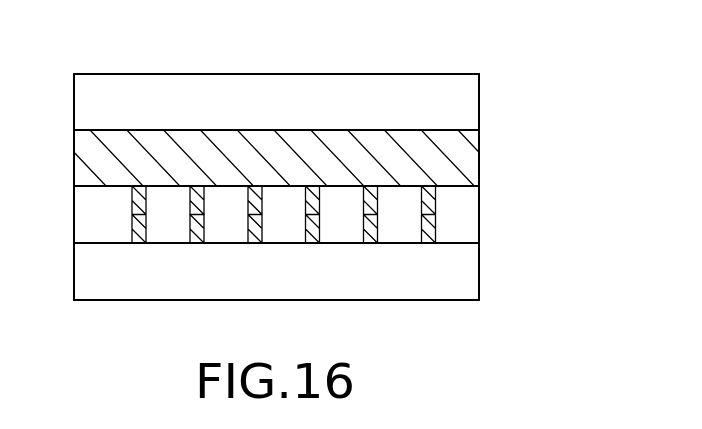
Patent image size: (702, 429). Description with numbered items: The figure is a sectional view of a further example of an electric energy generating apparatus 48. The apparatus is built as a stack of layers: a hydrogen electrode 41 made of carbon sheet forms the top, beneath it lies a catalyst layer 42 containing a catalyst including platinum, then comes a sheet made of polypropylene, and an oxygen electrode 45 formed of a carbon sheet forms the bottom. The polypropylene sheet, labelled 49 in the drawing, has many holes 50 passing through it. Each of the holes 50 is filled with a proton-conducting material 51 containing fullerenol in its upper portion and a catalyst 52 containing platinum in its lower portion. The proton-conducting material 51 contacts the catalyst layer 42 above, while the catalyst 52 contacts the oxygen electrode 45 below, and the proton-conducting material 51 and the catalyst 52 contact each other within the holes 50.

The electric energy generating apparatus 48 is at (495, 62).
The hydrogen electrode 41 is at (480, 91).
The catalyst layer 42 is at (480, 149).
The intermediate layer with conductive pillars 49 is at (480, 208).
The oxygen electrode 45 is at (480, 268).
The holes 50 is at (132, 218).
The proton-conducting material 51 is at (205, 200).
The catalyst 52 is at (206, 225).